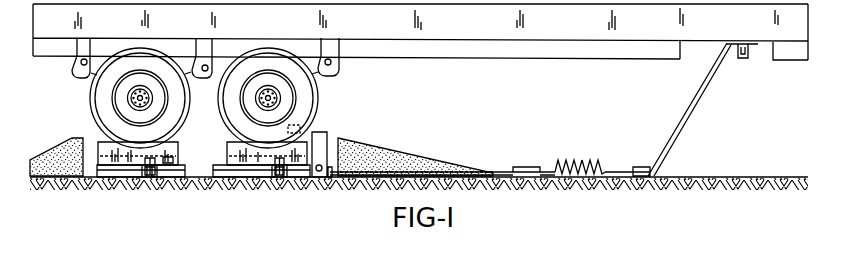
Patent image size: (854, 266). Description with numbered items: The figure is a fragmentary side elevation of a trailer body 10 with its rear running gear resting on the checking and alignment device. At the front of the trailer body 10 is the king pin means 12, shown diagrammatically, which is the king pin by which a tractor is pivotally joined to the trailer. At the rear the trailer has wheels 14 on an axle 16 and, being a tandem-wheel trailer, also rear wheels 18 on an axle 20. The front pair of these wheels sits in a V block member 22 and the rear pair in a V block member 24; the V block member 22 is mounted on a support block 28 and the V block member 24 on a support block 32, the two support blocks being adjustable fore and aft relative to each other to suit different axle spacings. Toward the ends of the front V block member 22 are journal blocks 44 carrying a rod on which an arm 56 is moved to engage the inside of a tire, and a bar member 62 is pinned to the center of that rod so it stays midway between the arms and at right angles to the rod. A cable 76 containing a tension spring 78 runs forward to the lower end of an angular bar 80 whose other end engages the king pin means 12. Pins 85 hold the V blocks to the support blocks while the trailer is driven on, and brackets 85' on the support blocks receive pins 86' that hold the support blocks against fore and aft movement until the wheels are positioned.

The trailer body 10 is at (482, 33).
The king pin means 12 is at (745, 47).
The wheels 14 is at (319, 94).
The axle 16 is at (271, 92).
The rear wheels 18 is at (104, 120).
The axle 20 is at (143, 95).
The V block member 22 is at (284, 177).
The V block member 24 is at (150, 178).
The support block 28 is at (252, 177).
The support block 32 is at (106, 177).
The journal blocks 44 is at (330, 153).
The arm 56 is at (316, 134).
The bar member 62 is at (513, 168).
The cable 76 is at (555, 164).
The tension spring 78 is at (594, 163).
The angular bar 80 is at (677, 134).
The pins 85 is at (202, 145).
The brackets 85' is at (188, 210).
The pins 86' is at (215, 210).